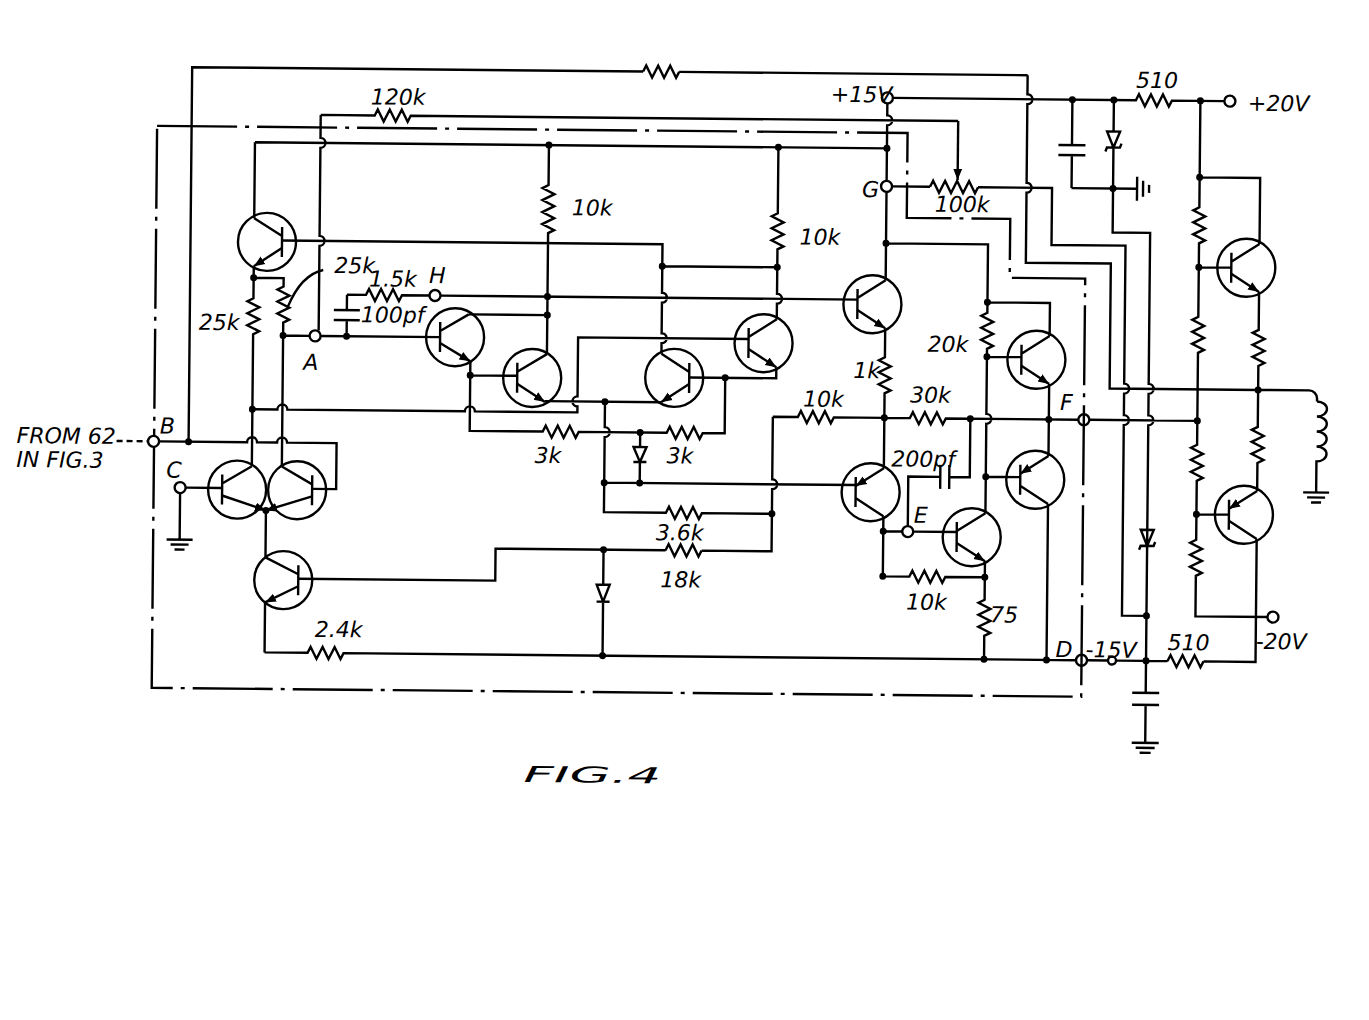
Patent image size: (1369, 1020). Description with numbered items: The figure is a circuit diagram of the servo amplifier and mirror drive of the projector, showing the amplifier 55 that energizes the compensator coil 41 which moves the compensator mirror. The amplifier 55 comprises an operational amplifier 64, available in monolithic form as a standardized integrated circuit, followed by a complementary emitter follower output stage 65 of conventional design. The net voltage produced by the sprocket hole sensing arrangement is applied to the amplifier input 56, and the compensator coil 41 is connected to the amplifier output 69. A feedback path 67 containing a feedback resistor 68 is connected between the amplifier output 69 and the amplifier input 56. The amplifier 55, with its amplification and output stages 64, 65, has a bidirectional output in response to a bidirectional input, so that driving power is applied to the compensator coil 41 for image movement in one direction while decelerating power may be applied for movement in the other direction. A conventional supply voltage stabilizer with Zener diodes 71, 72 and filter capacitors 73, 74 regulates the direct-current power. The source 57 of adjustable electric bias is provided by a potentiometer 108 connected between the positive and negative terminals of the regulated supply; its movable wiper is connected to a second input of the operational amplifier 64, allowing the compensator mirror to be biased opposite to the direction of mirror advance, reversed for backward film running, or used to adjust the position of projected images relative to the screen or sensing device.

The compensator coil 41 is at (1305, 412).
The amplifier 55 is at (1214, 473).
The amplifier input 56 is at (153, 440).
The source of adjustable electric bias 57 is at (947, 168).
The operational amplifier 64 is at (690, 206).
The complementary emitter follower output stage 65 is at (1247, 376).
The feedback path 67 is at (187, 100).
The feedback resistor 68 is at (676, 68).
The amplifier output 69 is at (1258, 384).
The Zener diode 71 is at (1120, 139).
The Zener diode 72 is at (1151, 556).
The filter capacitor 73 is at (1061, 140).
The filter capacitor 74 is at (1161, 705).
The potentiometer 108 is at (968, 172).